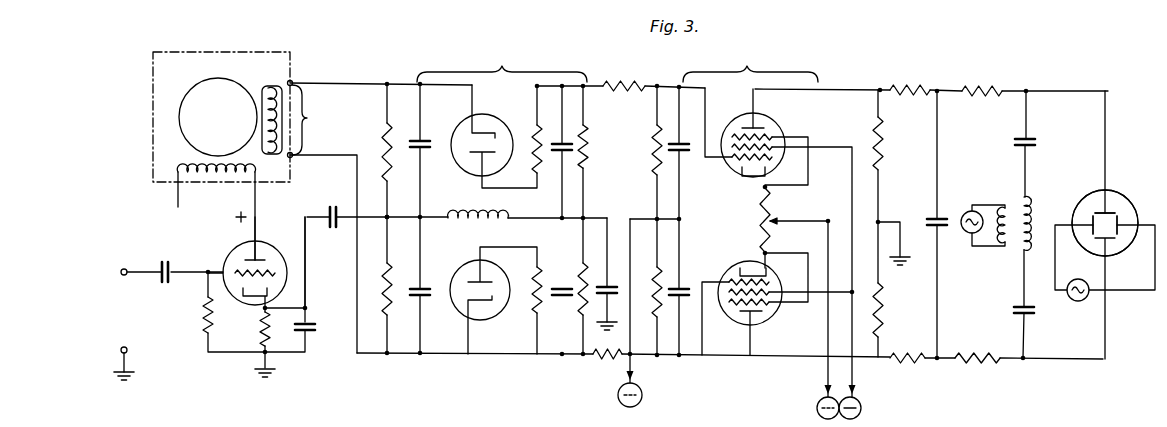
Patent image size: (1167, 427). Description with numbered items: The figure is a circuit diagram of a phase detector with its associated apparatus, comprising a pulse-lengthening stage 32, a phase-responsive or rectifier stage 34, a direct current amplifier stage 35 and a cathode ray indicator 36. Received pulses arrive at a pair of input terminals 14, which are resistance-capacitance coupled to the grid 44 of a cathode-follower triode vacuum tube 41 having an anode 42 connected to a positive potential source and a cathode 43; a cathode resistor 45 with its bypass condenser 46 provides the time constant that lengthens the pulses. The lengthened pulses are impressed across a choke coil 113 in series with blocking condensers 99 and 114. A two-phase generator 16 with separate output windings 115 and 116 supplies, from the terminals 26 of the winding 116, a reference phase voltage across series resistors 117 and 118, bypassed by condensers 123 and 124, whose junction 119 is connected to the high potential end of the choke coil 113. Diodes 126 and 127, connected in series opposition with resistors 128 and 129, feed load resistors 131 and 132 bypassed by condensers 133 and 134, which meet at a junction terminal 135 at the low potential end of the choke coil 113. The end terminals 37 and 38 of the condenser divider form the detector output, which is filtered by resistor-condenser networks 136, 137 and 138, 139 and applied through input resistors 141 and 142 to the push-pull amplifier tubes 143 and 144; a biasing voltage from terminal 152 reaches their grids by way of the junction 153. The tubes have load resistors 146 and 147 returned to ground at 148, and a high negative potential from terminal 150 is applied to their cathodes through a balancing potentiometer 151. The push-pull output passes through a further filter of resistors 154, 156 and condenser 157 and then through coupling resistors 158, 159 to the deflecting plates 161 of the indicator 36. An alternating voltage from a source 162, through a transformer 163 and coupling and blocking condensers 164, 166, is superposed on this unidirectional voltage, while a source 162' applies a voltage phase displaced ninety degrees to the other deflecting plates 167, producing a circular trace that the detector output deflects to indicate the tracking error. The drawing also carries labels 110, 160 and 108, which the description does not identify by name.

The two-phase generator 16 is at (181, 56).
The output winding 116 is at (274, 85).
The reference phase voltage terminals 26 is at (309, 120).
The output winding 115 is at (178, 172).
The resistor 117 is at (383, 141).
The resistor 118 is at (380, 306).
The junction 119 is at (386, 215).
The blocking condenser 99 is at (333, 206).
The pulse-lengthening stage 32 is at (240, 251).
The cathode-follower triode vacuum tube 41 is at (224, 268).
The anode 42 is at (262, 258).
The cathode 43 is at (220, 315).
The control electrode or grid 44 is at (276, 272).
The cathode resistor 45 is at (271, 342).
The bypass condenser 46 is at (313, 322).
The conductor 110 is at (306, 267).
The input terminals 14 is at (123, 276).
The rectifier stage 34 is at (502, 62).
The direct current amplifier stage 35 is at (750, 63).
The output terminal 37 is at (563, 85).
The resistor 136 is at (625, 84).
The condenser 123 is at (422, 140).
The resistor 128 is at (536, 126).
The rectifying element 126 is at (461, 172).
The choke coil 113 is at (480, 214).
The condenser 133 is at (560, 157).
The load resistor 131 is at (601, 128).
The input resistor 141 is at (654, 158).
The junction terminal 135 is at (565, 216).
The load resistor 132 is at (586, 272).
The junction 153 is at (657, 217).
The resistor 129 is at (540, 268).
The rectifying element 127 is at (453, 267).
The condenser 124 is at (426, 299).
The condenser 134 is at (553, 270).
The blocking condenser 114 is at (607, 285).
The output terminal 38 is at (560, 357).
The resistor 138 is at (603, 360).
The terminal 152 is at (643, 398).
The condenser 137 is at (683, 152).
The amplifier tube 143 is at (776, 125).
The balancing potentiometer 151 is at (762, 205).
The input resistor 142 is at (662, 266).
The amplifier tube 144 is at (738, 272).
The condenser 139 is at (683, 298).
The terminal 150 is at (818, 413).
The meter 160 is at (859, 413).
The load resistor 146 is at (884, 150).
The ground 148 is at (881, 222).
The load resistor 147 is at (884, 313).
The resistor 156 is at (893, 362).
The coupling resistor 159 is at (962, 362).
The resistor 154 is at (905, 88).
The coupling resistor 158 is at (990, 88).
The coupling and blocking condenser 166 is at (1033, 140).
The source 162 is at (978, 204).
The condenser 157 is at (942, 231).
The transformer 163 is at (1019, 252).
The coupling and blocking condenser 164 is at (1016, 316).
The cathode ray indicator 36 is at (1142, 176).
The vacuum tube 108 is at (1077, 202).
The deflecting plates 161 is at (1112, 212).
The deflecting plates 167 is at (1120, 236).
The source 162' is at (1065, 311).